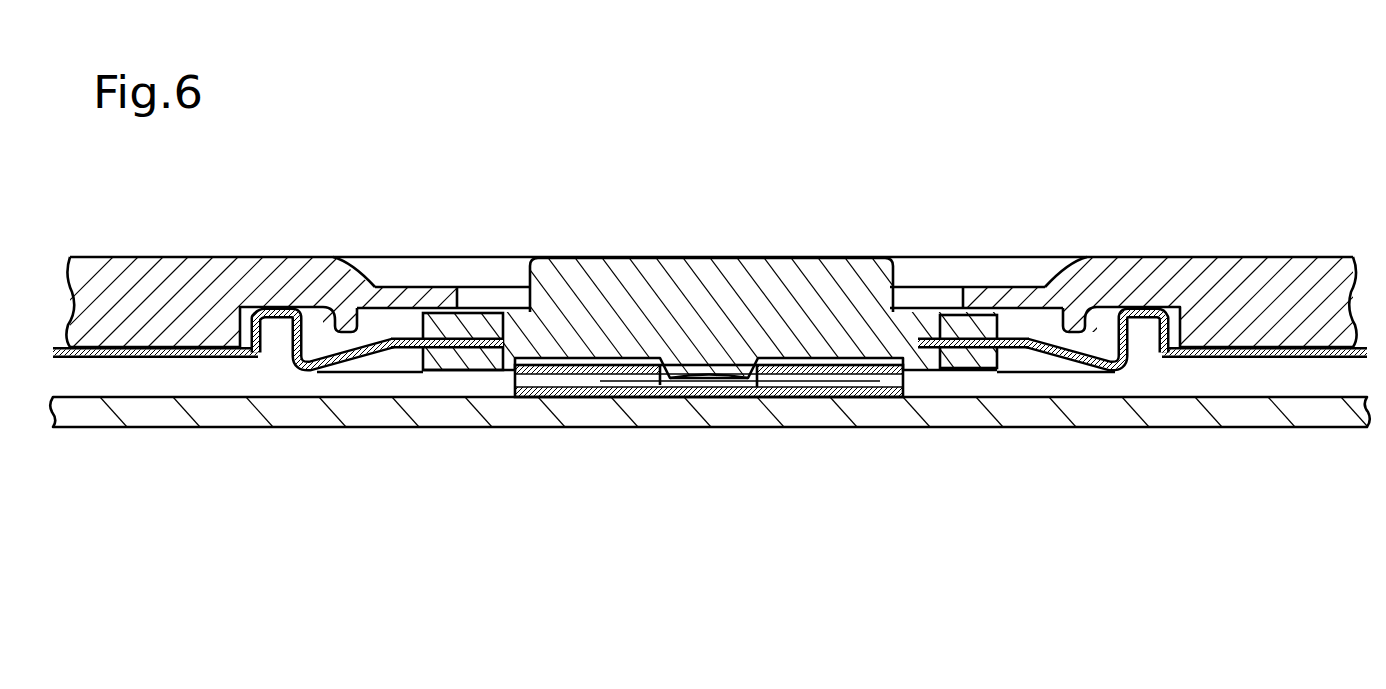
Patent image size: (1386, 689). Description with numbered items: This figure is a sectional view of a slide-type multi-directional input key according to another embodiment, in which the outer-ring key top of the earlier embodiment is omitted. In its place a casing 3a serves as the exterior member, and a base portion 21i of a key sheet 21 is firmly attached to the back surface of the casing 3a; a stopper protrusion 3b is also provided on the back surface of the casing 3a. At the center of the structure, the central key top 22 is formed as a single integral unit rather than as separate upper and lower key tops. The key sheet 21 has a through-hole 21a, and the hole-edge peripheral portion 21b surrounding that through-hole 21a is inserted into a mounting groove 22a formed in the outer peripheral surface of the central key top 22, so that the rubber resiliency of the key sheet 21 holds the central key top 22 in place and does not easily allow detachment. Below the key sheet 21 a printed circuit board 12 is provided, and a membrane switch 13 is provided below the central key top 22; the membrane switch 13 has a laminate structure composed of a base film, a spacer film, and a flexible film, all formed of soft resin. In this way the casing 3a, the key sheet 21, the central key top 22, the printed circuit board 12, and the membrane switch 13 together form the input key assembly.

The casing 3a is at (1128, 257).
The stopper protrusion 3b is at (348, 332).
The printed circuit board 12 is at (1195, 427).
The membrane switch 13 is at (610, 397).
The key sheet 21 is at (710, 346).
The base portion 21i is at (157, 347).
The through-hole 21a is at (948, 355).
The hole-edge peripheral portion 21b is at (457, 363).
The central key top 22 is at (715, 257).
The mounting groove 22a is at (476, 338).